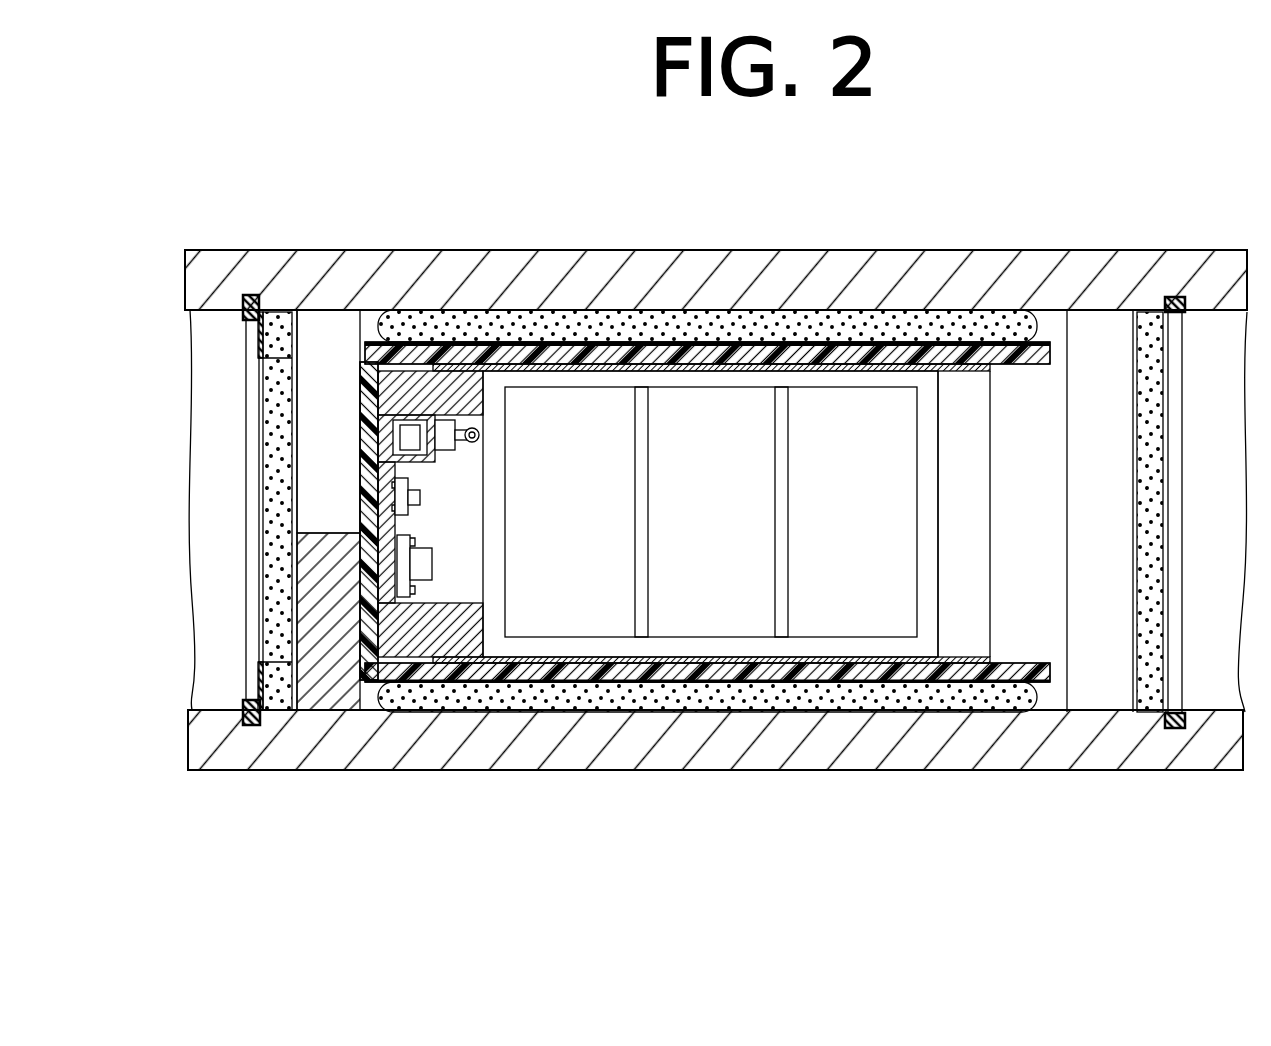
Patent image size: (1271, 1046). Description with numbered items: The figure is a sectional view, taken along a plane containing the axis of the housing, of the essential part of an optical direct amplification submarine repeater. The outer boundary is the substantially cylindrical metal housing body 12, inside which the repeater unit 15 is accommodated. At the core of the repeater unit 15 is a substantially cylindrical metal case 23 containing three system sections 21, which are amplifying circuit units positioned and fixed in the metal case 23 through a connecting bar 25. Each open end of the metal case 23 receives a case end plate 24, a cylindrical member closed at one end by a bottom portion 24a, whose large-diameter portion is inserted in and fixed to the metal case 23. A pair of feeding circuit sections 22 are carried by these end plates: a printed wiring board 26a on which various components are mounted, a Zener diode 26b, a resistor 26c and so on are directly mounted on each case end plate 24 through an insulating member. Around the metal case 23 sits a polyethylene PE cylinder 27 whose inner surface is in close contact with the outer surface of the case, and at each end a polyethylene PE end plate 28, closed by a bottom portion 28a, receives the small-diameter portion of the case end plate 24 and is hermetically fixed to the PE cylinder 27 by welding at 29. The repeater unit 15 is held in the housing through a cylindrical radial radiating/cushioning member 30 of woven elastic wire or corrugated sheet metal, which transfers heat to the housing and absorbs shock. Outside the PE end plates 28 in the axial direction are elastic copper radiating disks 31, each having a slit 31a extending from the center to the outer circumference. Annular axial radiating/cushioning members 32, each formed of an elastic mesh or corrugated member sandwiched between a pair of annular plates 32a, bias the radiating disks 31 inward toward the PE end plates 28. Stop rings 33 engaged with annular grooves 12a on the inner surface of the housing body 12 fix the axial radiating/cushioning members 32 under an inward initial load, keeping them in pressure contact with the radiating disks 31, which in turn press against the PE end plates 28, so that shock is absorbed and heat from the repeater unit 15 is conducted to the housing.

The housing body 12 is at (672, 252).
The annular grooves 12a is at (262, 725).
The repeater unit 15 is at (605, 688).
The system sections 21 is at (845, 622).
The feeding circuit sections 22 is at (455, 588).
The metal case 23 is at (812, 375).
The case end plates 24 is at (465, 392).
The bottom portion 24a is at (367, 480).
The connecting bar 25 is at (605, 378).
The printed wiring board 26a is at (435, 563).
The Zener diode 26b is at (448, 448).
The resistor 26c is at (420, 497).
The PE cylinder 27 is at (527, 352).
The PE end plates 28 is at (406, 330).
The bottom portion 28a is at (362, 432).
The welding 29 is at (363, 345).
The radial radiating/cushioning member 30 is at (748, 322).
The radiating disks 31 is at (317, 712).
The slit 31a is at (316, 318).
The axial radiating/cushioning members 32 is at (268, 600).
The annular plates 32a is at (262, 468).
The stop rings 33 is at (248, 386).